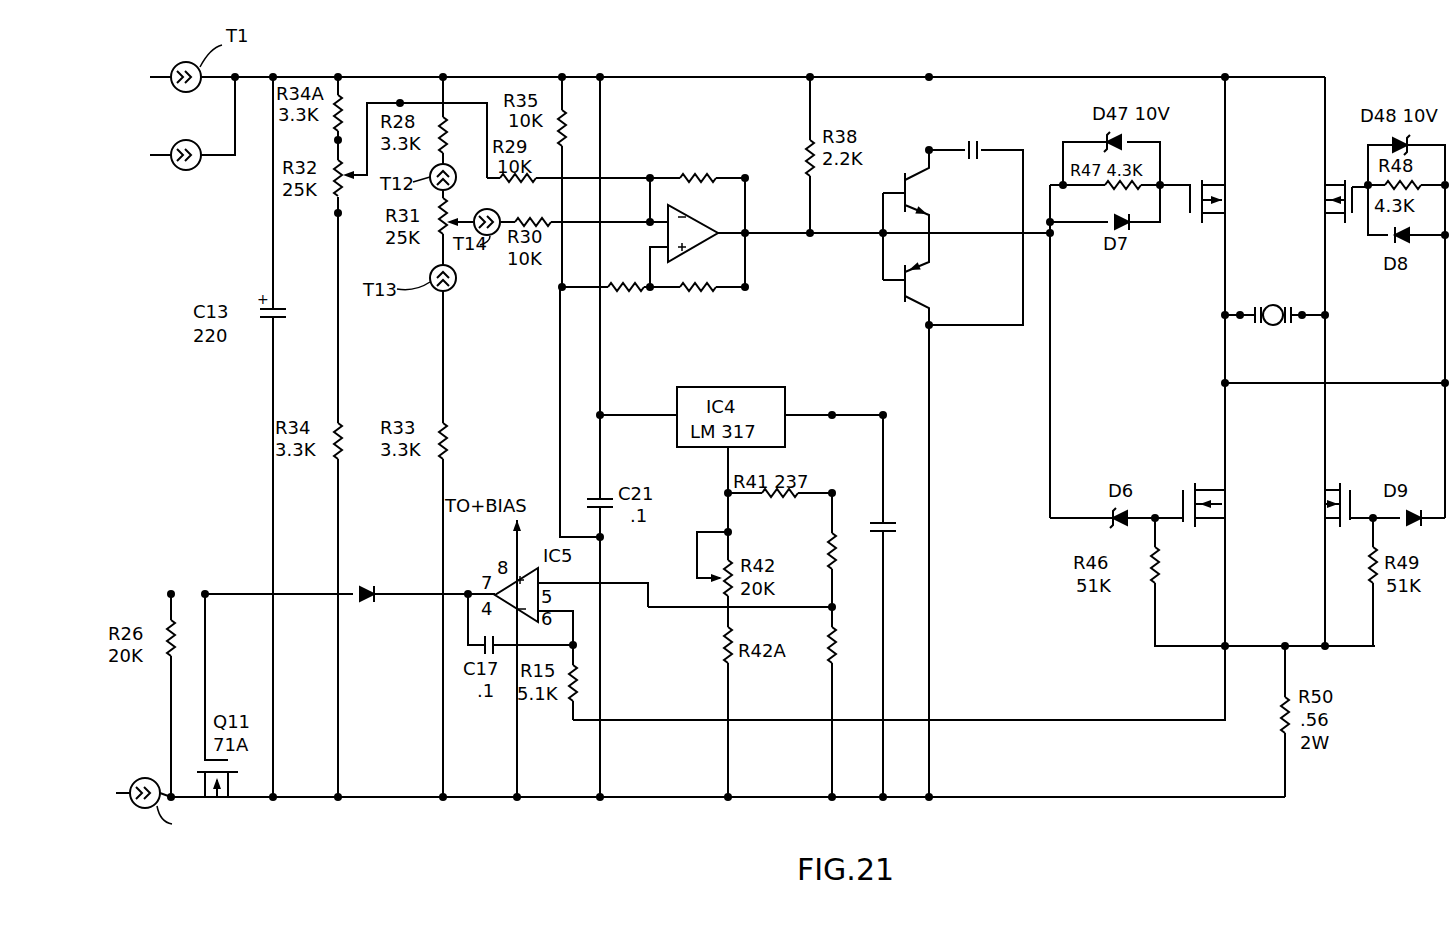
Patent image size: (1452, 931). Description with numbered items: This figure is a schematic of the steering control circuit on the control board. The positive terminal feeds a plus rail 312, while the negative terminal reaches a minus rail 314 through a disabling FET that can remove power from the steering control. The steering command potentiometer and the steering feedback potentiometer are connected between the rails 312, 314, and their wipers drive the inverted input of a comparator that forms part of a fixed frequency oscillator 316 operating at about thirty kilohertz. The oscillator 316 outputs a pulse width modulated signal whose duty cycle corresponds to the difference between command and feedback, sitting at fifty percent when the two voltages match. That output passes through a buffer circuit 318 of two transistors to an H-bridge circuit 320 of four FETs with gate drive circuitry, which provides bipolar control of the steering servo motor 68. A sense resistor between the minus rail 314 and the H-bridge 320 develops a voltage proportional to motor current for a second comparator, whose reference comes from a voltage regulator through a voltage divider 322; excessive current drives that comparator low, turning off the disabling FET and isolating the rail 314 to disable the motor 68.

The plus rail 312 is at (480, 77).
The minus rail 314 is at (370, 800).
The fixed frequency oscillator 316 is at (732, 140).
The buffer circuit 318 is at (1024, 140).
The H-bridge circuit 320 is at (1280, 72).
The voltage divider 322 is at (851, 500).
The steering servo motor 68 is at (1274, 326).